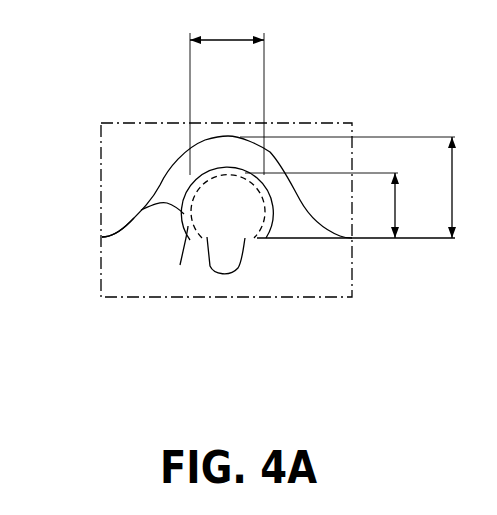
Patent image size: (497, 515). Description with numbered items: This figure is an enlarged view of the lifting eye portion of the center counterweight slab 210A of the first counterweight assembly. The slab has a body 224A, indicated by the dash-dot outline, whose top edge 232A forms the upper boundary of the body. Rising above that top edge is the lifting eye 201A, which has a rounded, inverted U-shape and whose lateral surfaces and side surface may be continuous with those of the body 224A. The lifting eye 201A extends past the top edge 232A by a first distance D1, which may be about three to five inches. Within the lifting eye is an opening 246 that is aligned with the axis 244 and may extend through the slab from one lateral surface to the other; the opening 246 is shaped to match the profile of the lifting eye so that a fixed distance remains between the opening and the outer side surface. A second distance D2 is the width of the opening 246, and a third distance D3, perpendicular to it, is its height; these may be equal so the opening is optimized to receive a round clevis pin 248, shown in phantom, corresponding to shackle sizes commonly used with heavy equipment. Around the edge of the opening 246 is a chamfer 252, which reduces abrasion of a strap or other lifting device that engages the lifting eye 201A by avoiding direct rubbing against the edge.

The center counterweight slab 210A is at (82, 103).
The lifting eye 201A is at (175, 163).
The top edge 232A is at (110, 236).
The opening 246 is at (142, 209).
The body 224A is at (118, 285).
The axis 244 is at (227, 208).
The clevis pin 248 is at (239, 244).
The chamfer 252 is at (180, 265).
The first distance D1 is at (361, 187).
The second distance D2 is at (227, 94).
The third distance D3 is at (336, 205).